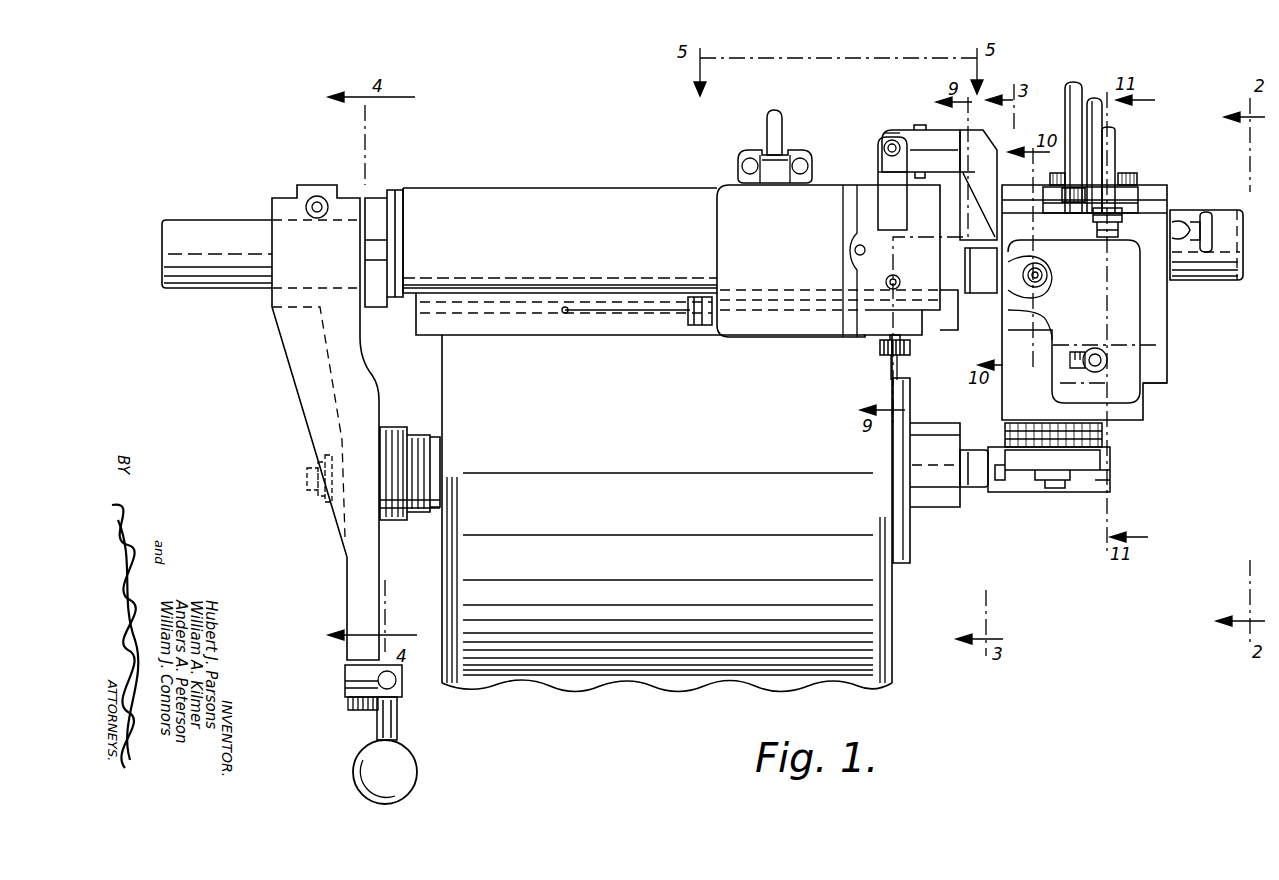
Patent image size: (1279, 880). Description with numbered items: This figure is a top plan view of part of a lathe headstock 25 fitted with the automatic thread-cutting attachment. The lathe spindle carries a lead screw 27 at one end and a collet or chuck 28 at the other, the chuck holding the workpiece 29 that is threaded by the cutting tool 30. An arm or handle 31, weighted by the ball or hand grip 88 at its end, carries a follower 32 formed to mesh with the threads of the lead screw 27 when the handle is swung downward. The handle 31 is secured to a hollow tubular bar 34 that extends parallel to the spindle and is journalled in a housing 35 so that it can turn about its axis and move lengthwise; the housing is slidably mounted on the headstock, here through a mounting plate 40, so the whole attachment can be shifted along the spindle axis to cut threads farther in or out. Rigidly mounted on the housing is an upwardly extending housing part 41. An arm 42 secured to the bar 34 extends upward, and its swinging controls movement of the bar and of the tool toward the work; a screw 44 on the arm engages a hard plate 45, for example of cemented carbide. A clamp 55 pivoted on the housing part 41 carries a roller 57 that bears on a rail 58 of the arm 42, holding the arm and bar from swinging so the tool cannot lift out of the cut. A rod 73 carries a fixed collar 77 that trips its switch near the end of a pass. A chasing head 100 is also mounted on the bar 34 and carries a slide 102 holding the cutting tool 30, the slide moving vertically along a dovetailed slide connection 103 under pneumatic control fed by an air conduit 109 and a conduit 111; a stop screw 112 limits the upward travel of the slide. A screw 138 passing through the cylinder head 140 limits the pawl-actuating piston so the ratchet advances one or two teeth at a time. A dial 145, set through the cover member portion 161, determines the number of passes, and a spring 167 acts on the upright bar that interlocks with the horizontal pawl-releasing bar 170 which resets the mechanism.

The headstock 25 is at (895, 660).
The lead screw 27 is at (426, 427).
The collet or chuck 28 is at (962, 442).
The workpiece 29 is at (970, 490).
The cutting tool 30 is at (1000, 486).
The arm or handle 31 is at (350, 570).
The follower 32 is at (390, 520).
The bar 34 is at (163, 248).
The housing 35 is at (566, 190).
The mounting plate 40 is at (548, 338).
The housing part 41 is at (870, 86).
The arm 42 is at (994, 144).
The screw 44 is at (920, 124).
The hard plate 45 is at (870, 180).
The clamp 55 is at (878, 200).
The roller 57 is at (893, 135).
The rail 58 is at (950, 166).
The rod 73 is at (898, 358).
The collar 77 is at (880, 347).
The ball or hand grip 88 is at (353, 772).
The chasing head 100 is at (1188, 114).
The slide 102 is at (1165, 366).
The dovetailed slide connection 103 is at (1165, 340).
The air conduit 109 is at (1115, 150).
The conduit 111 is at (1086, 78).
The stop screw 112 is at (1107, 360).
The screw 138 is at (1037, 270).
The head 140 is at (1041, 276).
The dial 145 is at (1140, 176).
The cover member portion 161 is at (1128, 214).
The spring 167 is at (1224, 205).
The horizontal bar 170 is at (1180, 218).